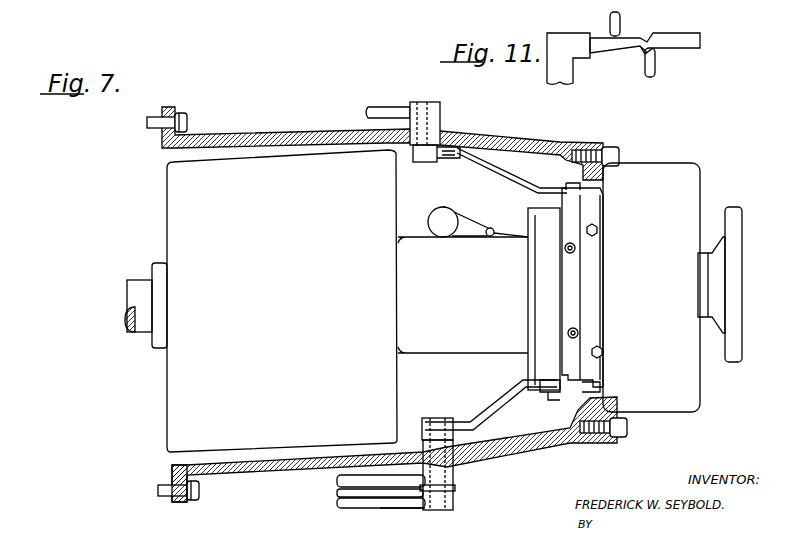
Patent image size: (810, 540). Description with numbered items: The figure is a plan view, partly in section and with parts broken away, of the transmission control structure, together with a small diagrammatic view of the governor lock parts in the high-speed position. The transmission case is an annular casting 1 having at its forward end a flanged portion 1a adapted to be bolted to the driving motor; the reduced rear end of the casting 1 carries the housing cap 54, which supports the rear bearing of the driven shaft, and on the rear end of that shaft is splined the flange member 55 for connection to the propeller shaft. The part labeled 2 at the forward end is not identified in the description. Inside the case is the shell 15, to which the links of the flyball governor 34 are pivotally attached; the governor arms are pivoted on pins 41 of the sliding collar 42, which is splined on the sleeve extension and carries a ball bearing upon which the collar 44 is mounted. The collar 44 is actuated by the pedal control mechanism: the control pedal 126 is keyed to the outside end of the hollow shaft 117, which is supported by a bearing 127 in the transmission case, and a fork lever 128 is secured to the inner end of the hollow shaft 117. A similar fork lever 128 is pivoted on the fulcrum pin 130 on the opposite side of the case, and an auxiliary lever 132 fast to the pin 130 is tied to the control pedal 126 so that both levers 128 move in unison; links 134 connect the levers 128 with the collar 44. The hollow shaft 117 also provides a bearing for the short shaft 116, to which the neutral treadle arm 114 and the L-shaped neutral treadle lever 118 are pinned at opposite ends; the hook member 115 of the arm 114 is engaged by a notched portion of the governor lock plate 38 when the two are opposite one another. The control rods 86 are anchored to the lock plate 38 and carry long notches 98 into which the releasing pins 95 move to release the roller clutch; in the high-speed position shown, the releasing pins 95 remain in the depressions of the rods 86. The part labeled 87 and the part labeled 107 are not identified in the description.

In FIG. 7, the annular casting 1 is at (236, 134).
In FIG. 7, the flanged portion 1a is at (180, 500).
In FIG. 7, the shaft 2 is at (127, 280).
In FIG. 7, the shell 15 is at (398, 178).
In FIG. 7, the flyball governor 34 is at (456, 211).
In FIG. 7, the pins 41 is at (575, 252).
In FIG. 7, the sliding collar 42 is at (572, 298).
In FIG. 7, the collar 44 is at (603, 206).
In FIG. 7, the housing cap 54 is at (700, 190).
In FIG. 7, the flange member 55 is at (725, 224).
In FIG. 7, the clip 87 is at (603, 192).
In FIG. 7, the neutral treadle arm 114 is at (491, 404).
In FIG. 7, the hook member 115 is at (555, 377).
In FIG. 7, the short shaft 116 is at (453, 466).
In FIG. 7, the hollow shaft 117 is at (456, 490).
In FIG. 7, the neutral treadle lever 118 is at (376, 510).
In FIG. 7, the control pedal 126 is at (336, 494).
In FIG. 7, the bearing 127 is at (422, 450).
In FIG. 7, the fork lever 128 is at (458, 160).
In FIG. 7, the fulcrum pin 130 is at (425, 162).
In FIG. 7, the auxiliary lever 132 is at (366, 111).
In FIG. 7, the links 134 is at (512, 175).
In FIG. 11, the governor lock plate 38 is at (574, 78).
In FIG. 11, the control rods 86 is at (700, 40).
In FIG. 11, the releasing pins 95 is at (656, 67).
In FIG. 11, the long notches 98 is at (642, 54).
In FIG. 11, the pin 107 is at (621, 21).